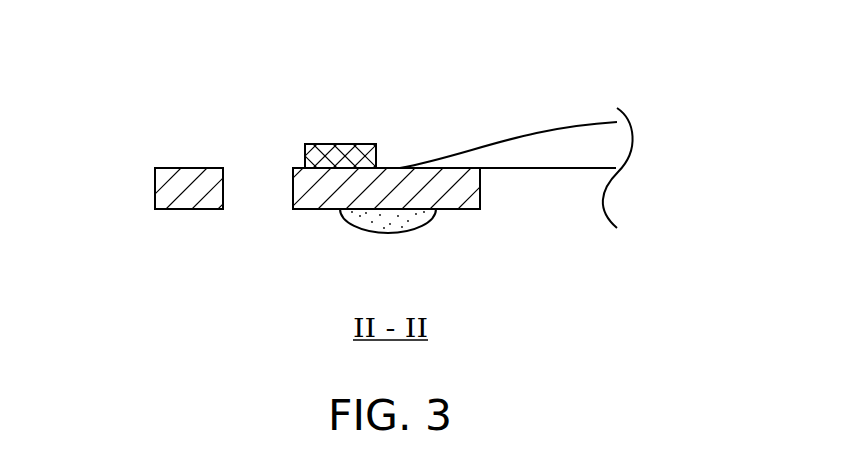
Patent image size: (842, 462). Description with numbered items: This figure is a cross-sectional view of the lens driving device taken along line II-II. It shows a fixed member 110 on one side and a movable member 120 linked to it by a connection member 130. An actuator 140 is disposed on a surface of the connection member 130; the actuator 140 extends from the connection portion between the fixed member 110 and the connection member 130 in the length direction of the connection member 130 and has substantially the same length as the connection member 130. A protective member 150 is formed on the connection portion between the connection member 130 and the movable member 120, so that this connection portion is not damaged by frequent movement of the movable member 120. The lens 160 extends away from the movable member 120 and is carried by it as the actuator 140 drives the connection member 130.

The fixed member 110 is at (196, 197).
The movable member 120 is at (457, 197).
The connection member 130 is at (308, 197).
The actuator 140 is at (339, 150).
The protective member 150 is at (390, 226).
The lens 160 is at (533, 153).